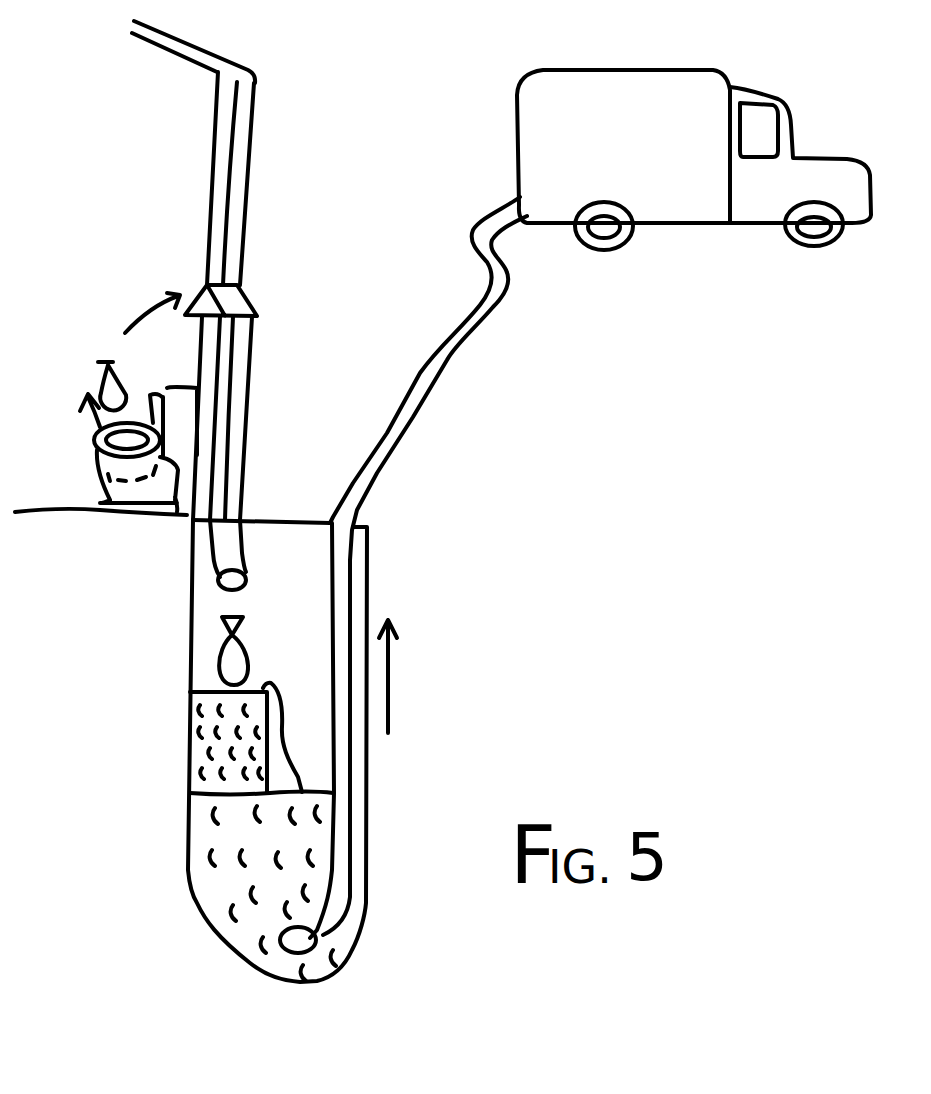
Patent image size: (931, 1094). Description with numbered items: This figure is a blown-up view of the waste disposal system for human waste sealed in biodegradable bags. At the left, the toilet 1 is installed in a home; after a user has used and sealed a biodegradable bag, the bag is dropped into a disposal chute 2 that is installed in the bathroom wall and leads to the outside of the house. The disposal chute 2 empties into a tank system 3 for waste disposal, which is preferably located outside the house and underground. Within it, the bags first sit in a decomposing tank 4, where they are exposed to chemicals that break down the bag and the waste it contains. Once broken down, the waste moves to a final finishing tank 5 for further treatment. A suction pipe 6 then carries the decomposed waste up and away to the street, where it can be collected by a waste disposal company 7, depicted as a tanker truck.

The toilet 1 is at (111, 437).
The disposal chute 2 is at (191, 305).
The tank system for waste disposal 3 is at (258, 637).
The decomposing tank 4 is at (217, 738).
The final finishing tank 5 is at (317, 978).
The suction pipe 6 is at (425, 566).
The waste disposal company 7 is at (694, 132).